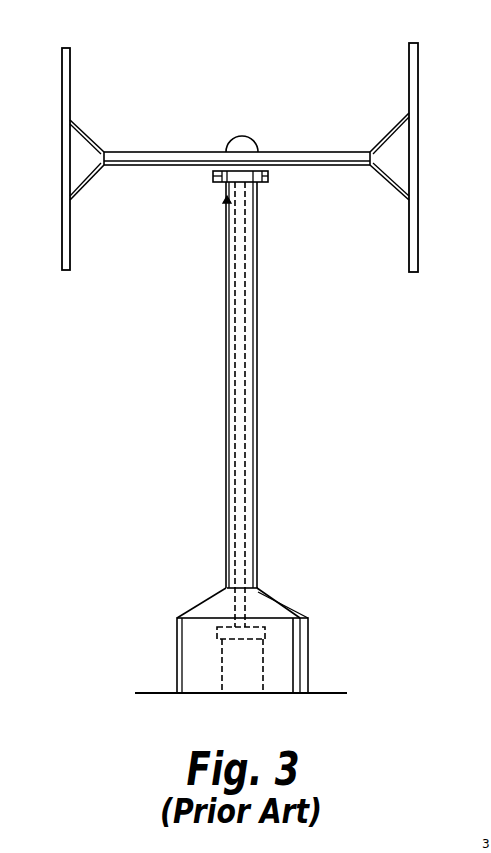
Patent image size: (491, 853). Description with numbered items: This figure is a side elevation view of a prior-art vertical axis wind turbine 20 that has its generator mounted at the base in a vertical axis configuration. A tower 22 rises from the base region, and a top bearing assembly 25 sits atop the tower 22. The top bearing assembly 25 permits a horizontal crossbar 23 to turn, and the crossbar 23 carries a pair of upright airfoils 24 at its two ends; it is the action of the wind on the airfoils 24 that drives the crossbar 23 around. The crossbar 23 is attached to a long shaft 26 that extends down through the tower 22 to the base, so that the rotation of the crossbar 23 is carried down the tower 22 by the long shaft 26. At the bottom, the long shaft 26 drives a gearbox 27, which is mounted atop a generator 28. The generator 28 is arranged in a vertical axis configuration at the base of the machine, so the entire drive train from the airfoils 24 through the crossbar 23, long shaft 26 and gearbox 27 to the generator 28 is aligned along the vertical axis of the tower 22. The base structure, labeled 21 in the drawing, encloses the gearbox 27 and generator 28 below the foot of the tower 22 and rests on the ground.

The vertical axis wind turbine 20 is at (167, 63).
The base 21 is at (308, 635).
The tower 22 is at (226, 415).
The crossbar 23 is at (312, 152).
The airfoils 24 is at (62, 78).
The top bearing assembly 25 is at (268, 177).
The long shaft 26 is at (240, 312).
The gearbox 27 is at (227, 637).
The generator 28 is at (237, 667).